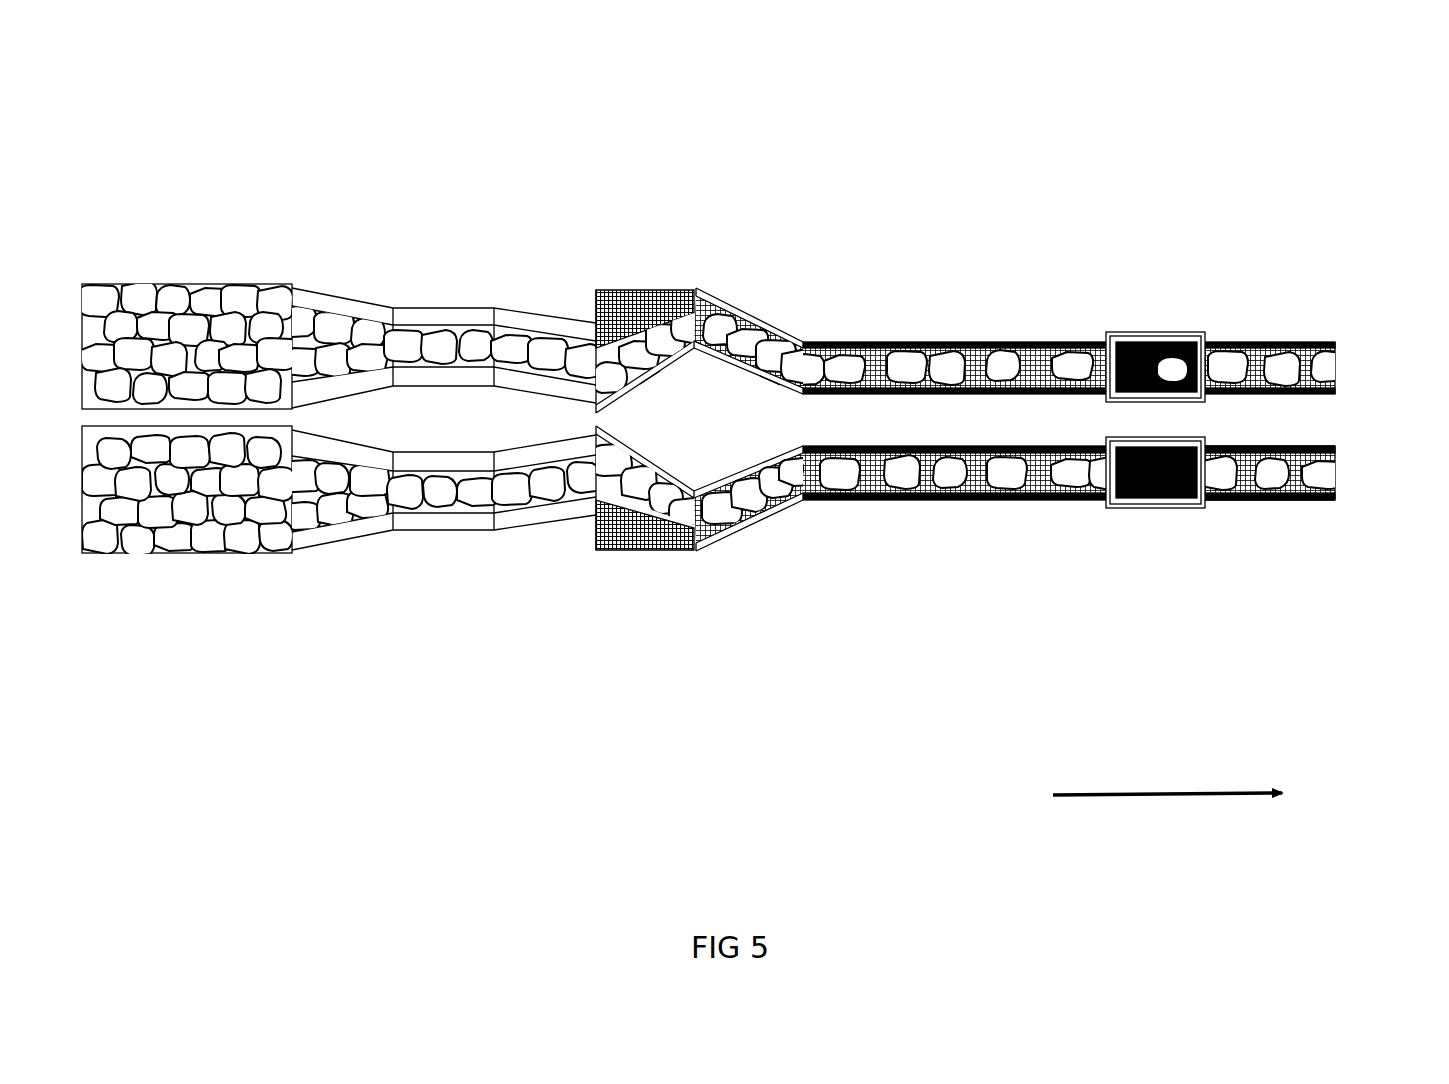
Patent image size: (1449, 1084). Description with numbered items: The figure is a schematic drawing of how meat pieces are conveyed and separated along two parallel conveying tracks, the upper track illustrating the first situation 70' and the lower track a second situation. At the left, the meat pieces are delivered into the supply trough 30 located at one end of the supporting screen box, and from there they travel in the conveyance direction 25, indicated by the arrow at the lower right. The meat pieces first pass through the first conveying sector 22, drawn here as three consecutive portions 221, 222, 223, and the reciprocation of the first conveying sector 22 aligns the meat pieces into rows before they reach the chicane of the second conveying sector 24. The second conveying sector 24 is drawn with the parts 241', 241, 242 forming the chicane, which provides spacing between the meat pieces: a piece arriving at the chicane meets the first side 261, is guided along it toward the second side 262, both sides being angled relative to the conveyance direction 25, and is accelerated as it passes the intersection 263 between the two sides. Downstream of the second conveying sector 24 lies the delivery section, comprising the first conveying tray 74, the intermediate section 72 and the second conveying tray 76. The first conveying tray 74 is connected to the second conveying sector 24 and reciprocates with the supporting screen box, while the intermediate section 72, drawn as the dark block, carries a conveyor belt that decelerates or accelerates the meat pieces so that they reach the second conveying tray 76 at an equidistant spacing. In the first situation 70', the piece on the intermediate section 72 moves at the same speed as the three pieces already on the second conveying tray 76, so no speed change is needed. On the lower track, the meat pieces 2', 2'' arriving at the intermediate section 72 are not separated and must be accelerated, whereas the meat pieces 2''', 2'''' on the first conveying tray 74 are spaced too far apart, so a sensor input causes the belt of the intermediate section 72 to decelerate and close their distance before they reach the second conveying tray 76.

The supply trough 30 is at (262, 565).
The first conveying sector 22 is at (440, 412).
The converging conduit portion 221 is at (347, 292).
The straight conduit portion 222 is at (448, 292).
The diverging conduit portion 223 is at (535, 292).
The second conveying sector 24 is at (774, 407).
The deflector block 241' is at (638, 307).
The first inclined wall 241 is at (651, 281).
The second inclined wall 242 is at (750, 307).
The first side of the chicane 261 is at (658, 389).
The second side of the chicane 262 is at (765, 392).
The intersection between the first and second sides of the chicane 263 is at (698, 356).
The first situation of the delivery section 70' is at (1119, 283).
The first conveying tray 74 is at (1052, 483).
The intermediate section 72 is at (1152, 512).
The second conveying tray 76 is at (1282, 512).
The meat piece 2' is at (1086, 555).
The meat piece 2'' is at (1053, 362).
The meat piece 2''' is at (996, 560).
The meat piece 2'''' is at (866, 555).
The conveyance direction 25 is at (1148, 794).